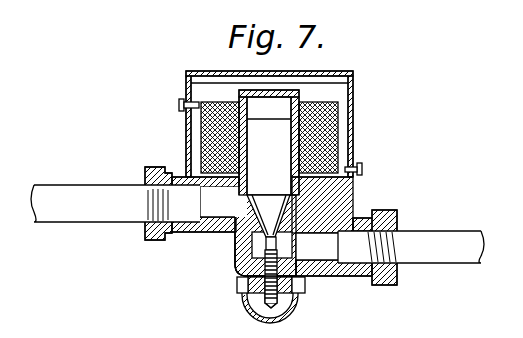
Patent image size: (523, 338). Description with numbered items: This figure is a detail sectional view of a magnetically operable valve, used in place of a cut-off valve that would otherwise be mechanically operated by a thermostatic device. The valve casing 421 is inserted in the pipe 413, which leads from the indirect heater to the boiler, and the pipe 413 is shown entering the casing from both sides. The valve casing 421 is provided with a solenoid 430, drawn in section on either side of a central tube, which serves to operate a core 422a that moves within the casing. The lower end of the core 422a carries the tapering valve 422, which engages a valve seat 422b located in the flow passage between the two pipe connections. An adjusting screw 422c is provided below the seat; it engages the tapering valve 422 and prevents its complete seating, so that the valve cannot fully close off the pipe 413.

The pipe 413 is at (88, 190).
The valve casing 421 is at (353, 121).
The tapering valve 422 is at (266, 199).
The core 422a is at (266, 138).
The valve seat 422b is at (232, 232).
The adjusting screw 422c is at (288, 288).
The solenoid 430 is at (330, 152).